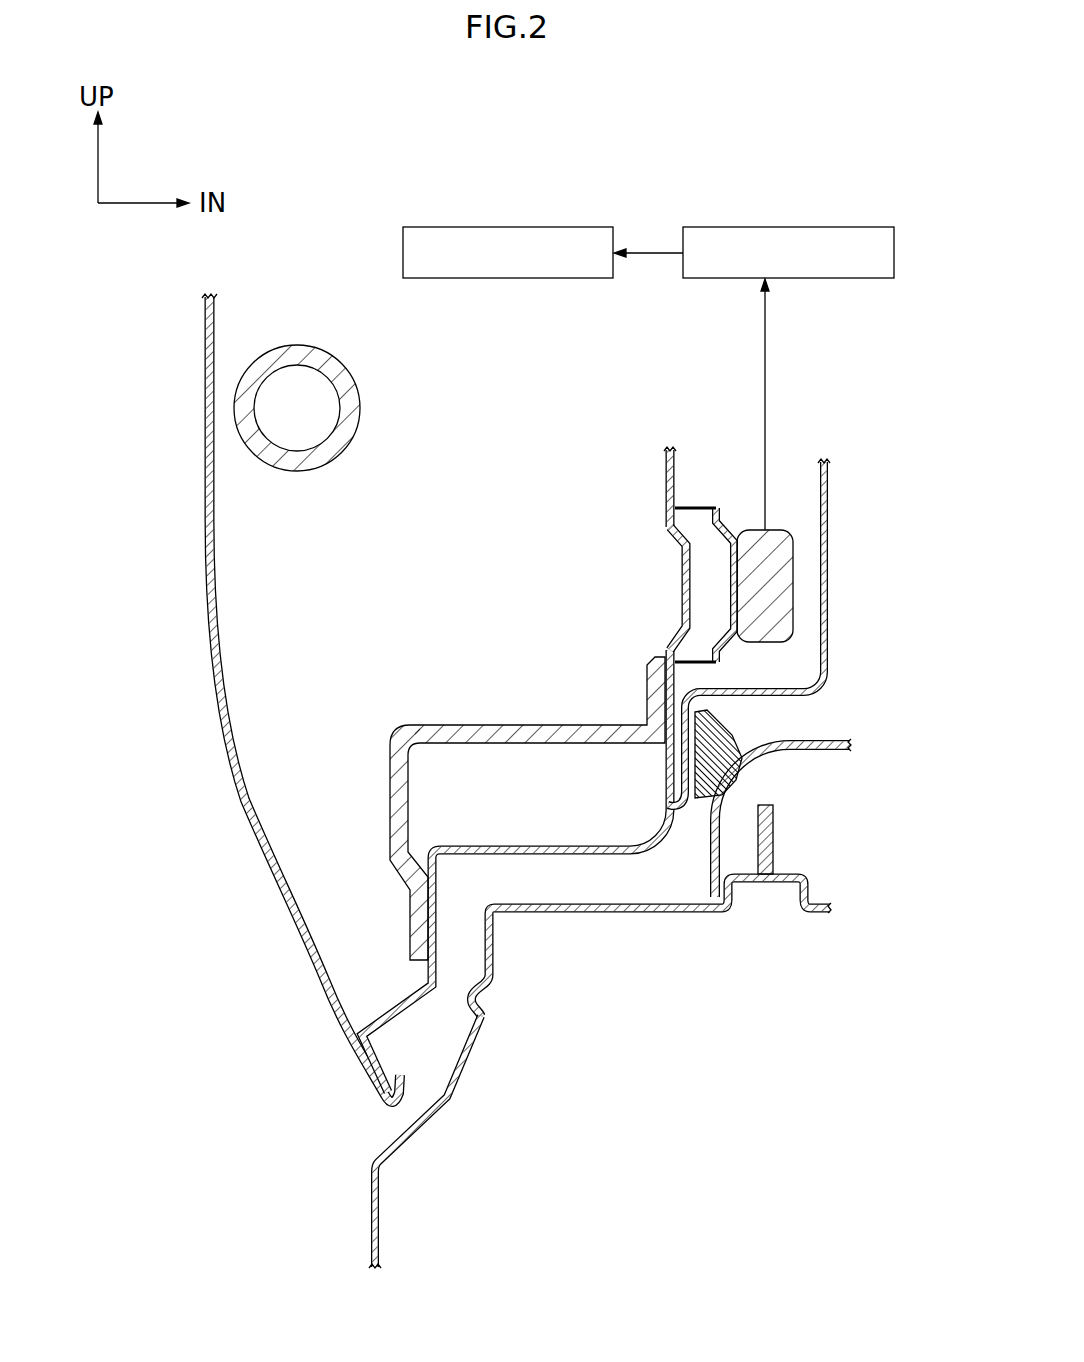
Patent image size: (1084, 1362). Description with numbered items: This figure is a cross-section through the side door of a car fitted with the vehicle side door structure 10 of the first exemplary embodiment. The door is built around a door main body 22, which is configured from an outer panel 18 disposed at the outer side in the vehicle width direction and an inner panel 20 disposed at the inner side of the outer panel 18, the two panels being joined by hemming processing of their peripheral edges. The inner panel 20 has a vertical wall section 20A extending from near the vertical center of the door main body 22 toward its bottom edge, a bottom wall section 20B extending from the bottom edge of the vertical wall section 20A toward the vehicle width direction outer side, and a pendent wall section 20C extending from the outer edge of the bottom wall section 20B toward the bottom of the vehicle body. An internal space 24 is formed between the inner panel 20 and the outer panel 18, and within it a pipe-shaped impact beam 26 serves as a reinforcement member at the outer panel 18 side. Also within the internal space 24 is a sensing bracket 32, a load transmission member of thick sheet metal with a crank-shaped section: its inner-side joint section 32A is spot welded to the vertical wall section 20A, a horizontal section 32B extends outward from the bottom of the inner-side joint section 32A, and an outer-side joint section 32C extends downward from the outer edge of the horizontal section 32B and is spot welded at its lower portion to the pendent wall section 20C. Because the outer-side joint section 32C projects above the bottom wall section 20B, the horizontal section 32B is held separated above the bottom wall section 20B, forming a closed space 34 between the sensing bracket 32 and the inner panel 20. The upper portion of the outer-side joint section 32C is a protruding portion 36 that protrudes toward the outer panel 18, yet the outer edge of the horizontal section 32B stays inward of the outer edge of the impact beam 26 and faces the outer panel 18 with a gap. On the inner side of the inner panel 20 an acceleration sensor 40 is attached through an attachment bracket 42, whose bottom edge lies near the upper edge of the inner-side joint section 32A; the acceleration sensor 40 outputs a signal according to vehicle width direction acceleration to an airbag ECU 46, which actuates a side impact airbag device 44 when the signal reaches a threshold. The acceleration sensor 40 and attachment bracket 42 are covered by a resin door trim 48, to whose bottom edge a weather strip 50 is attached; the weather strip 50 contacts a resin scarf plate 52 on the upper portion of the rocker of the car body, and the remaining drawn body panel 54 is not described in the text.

The vehicle side door structure 10 is at (177, 824).
The outer panel 18 is at (253, 698).
The inner panel 20 is at (524, 769).
The vertical wall section 20A is at (681, 602).
The bottom wall section 20B is at (500, 857).
The pendent wall section 20C is at (440, 942).
The door main body 22 is at (200, 479).
The internal space 24 is at (485, 480).
The impact beam 26 is at (353, 378).
The sensing bracket 32 is at (482, 802).
The inner-side joint section 32A is at (645, 680).
The horizontal section 32B is at (498, 722).
The outer-side joint section 32C is at (410, 902).
The closed space 34 is at (545, 810).
The protruding portion 36 is at (391, 782).
The acceleration sensor 40 is at (795, 605).
The attachment bracket 42 is at (704, 506).
The airbag device 44 is at (521, 226).
The airbag ECU 46 is at (803, 226).
The door trim 48 is at (829, 537).
The weather strip 50 is at (728, 730).
The scarf plate 52 is at (370, 1230).
The floor panel 54 is at (820, 752).